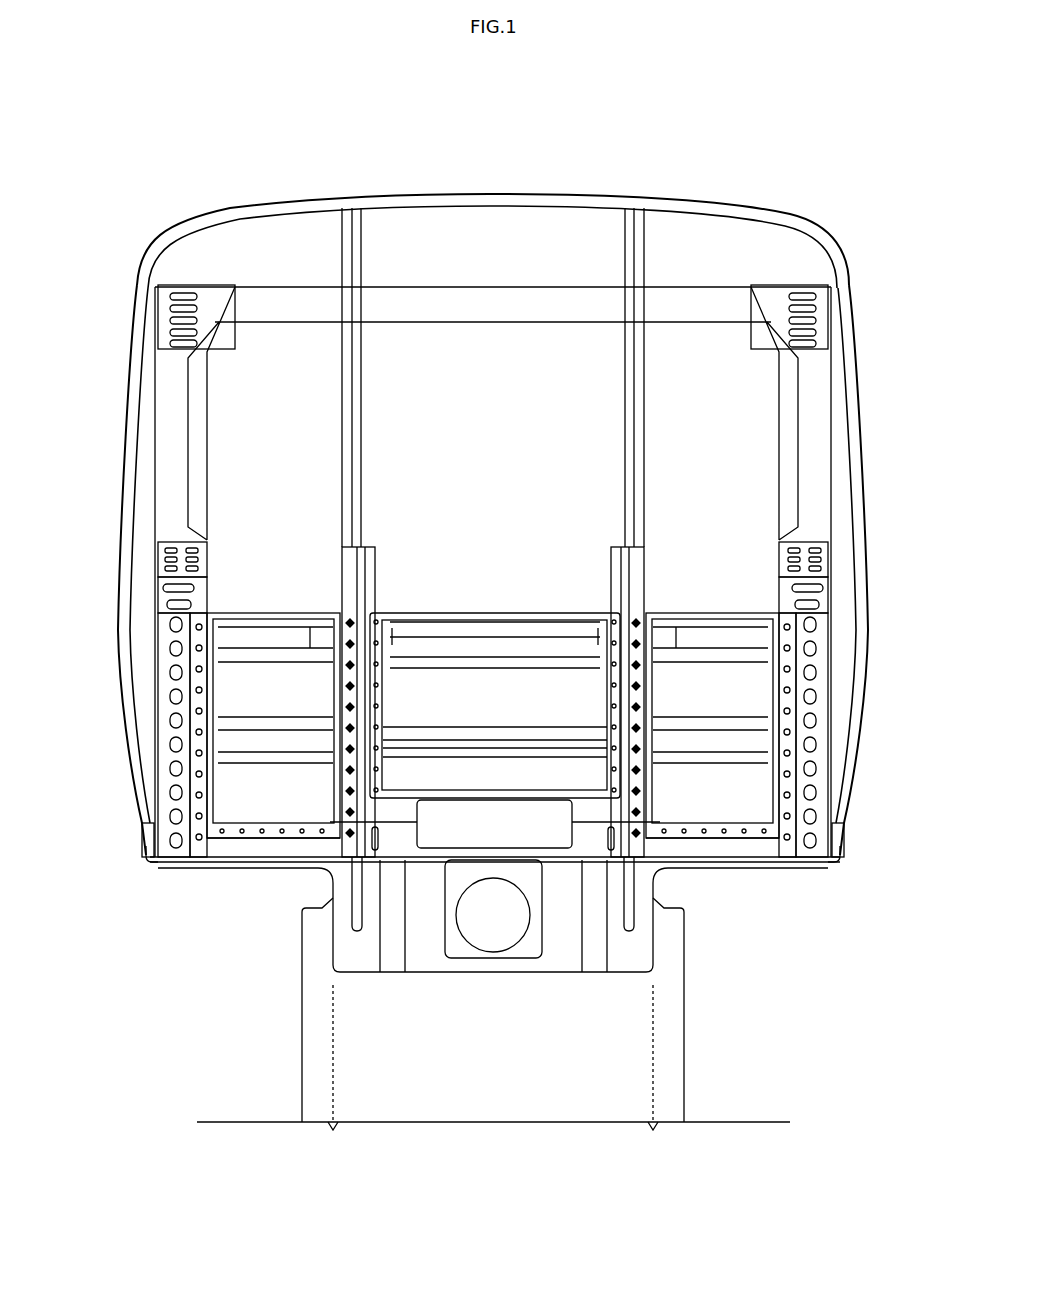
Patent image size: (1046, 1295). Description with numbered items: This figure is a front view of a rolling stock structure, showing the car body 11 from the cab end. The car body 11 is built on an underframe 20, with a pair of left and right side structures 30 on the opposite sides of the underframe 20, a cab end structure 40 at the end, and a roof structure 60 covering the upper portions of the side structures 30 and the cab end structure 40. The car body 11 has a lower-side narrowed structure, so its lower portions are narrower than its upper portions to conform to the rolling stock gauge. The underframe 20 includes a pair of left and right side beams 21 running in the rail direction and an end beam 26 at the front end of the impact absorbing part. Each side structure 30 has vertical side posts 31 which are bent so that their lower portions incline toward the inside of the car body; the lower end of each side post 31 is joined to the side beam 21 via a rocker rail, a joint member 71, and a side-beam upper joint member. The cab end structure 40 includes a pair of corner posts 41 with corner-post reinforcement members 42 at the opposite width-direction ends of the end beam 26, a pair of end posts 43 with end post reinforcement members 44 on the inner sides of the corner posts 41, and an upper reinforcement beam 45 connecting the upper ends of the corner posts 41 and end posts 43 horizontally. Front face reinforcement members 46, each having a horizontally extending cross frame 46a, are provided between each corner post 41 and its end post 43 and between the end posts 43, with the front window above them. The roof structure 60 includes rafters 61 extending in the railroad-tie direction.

The car body 11 is at (508, 125).
The roof structure 60 is at (288, 192).
The rafter 61 is at (472, 210).
The side structure 30 is at (122, 432).
The side post 31 is at (120, 680).
The upper reinforcement beam 45 is at (485, 324).
The cab end structure 40 is at (173, 278).
The corner post 41 is at (210, 536).
The corner-post reinforcement member 42 is at (203, 594).
The end post 43 is at (340, 442).
The end post reinforcement member 44 is at (374, 592).
The front face reinforcement member 46 is at (491, 604).
The cross frame 46a is at (481, 670).
The joint member 71 is at (144, 835).
The side beam 21 is at (154, 862).
The end beam 26 is at (727, 870).
The underframe 20 is at (248, 880).